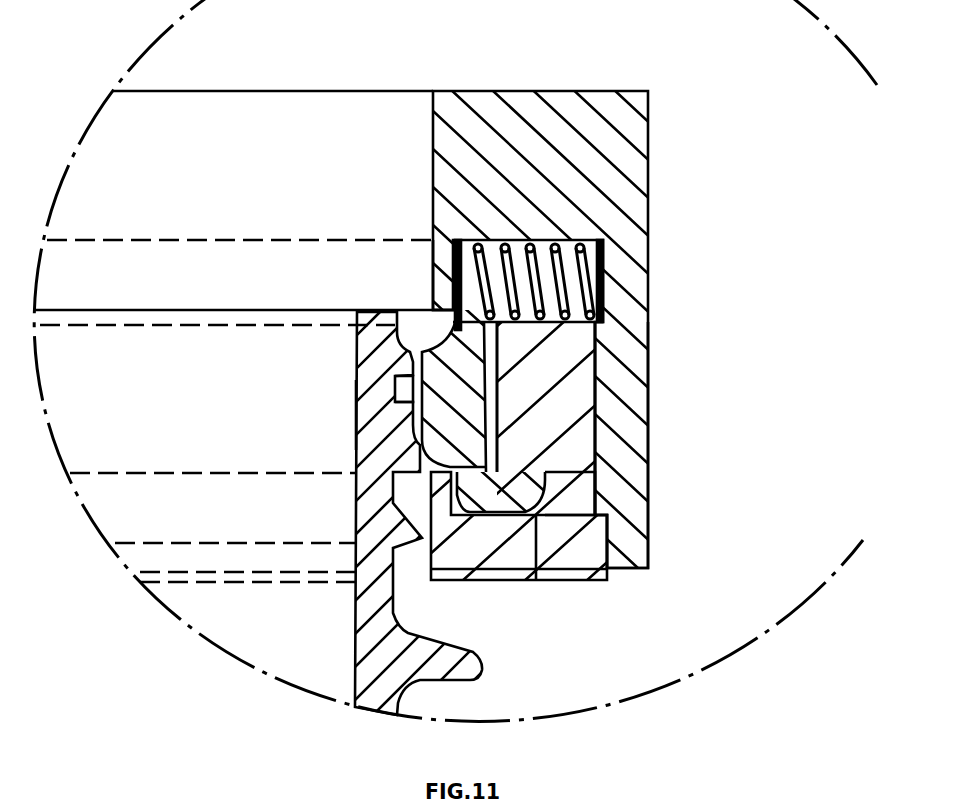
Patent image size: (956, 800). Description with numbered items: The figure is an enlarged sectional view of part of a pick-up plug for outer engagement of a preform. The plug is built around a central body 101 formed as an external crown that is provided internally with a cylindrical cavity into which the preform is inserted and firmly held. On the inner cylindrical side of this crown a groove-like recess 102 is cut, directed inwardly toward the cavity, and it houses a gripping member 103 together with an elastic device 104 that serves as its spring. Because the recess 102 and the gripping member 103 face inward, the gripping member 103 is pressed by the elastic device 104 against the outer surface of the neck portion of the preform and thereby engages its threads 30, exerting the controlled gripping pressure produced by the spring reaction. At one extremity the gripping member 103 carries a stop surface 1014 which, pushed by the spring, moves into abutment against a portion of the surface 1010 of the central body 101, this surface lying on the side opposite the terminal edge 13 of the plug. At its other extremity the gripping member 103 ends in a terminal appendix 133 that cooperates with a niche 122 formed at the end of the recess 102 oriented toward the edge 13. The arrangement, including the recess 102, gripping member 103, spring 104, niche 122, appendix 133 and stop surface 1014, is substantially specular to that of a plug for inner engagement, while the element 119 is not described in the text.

The central body 101 is at (542, 117).
The groove-like recess 102 is at (651, 445).
The surface 1010 is at (430, 308).
The stop surface 1014 is at (606, 271).
The elastic device 104 is at (467, 303).
The gripping member 103 is at (460, 367).
The threads 30 is at (395, 364).
The flange lip 119 is at (355, 412).
The terminal edge 13 is at (519, 473).
The terminal appendix 133 is at (573, 534).
The niche 122 is at (637, 485).